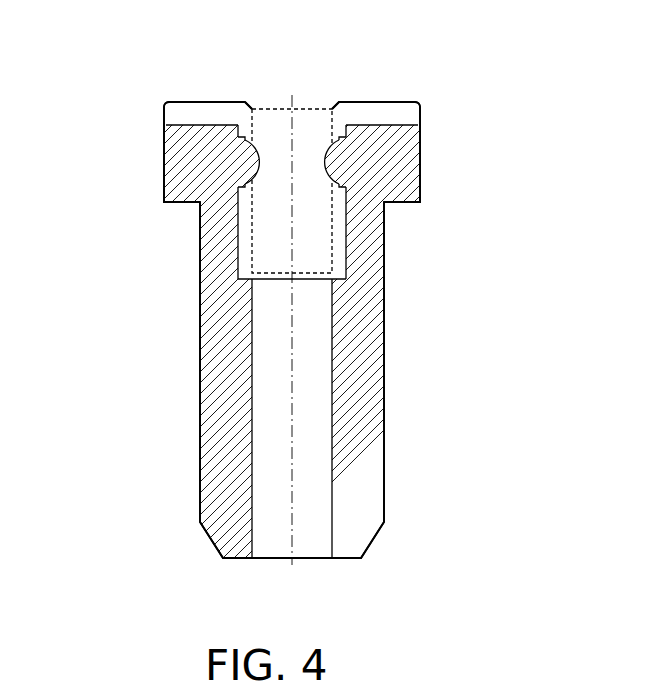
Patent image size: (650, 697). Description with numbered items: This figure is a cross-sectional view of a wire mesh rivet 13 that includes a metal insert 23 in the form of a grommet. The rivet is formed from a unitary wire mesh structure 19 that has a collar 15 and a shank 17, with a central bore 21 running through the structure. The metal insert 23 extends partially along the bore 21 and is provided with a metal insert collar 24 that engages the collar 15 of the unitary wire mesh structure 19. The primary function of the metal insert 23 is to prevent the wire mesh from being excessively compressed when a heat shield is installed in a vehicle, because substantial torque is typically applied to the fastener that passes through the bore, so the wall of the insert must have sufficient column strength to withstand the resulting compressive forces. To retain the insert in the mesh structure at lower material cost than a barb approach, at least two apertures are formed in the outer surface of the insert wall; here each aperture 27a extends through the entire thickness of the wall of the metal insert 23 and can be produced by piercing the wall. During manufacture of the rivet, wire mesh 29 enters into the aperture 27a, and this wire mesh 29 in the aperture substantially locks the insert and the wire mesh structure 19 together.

The wire mesh rivet 13 is at (165, 254).
The collar of wire mesh rivet 15 is at (393, 150).
The shank of wire mesh rivet 17 is at (355, 408).
The unitary wire mesh structure of wire mesh rivet 19 is at (218, 448).
The bore of unitary wire mesh structure 21 is at (305, 379).
The metal insert 23 is at (310, 240).
The metal insert collar 24 is at (383, 112).
The aperture which extends through entire thickness of wall of metal insert 27a is at (255, 163).
The wire mesh in aperture of wall of metal insert 29 is at (343, 167).